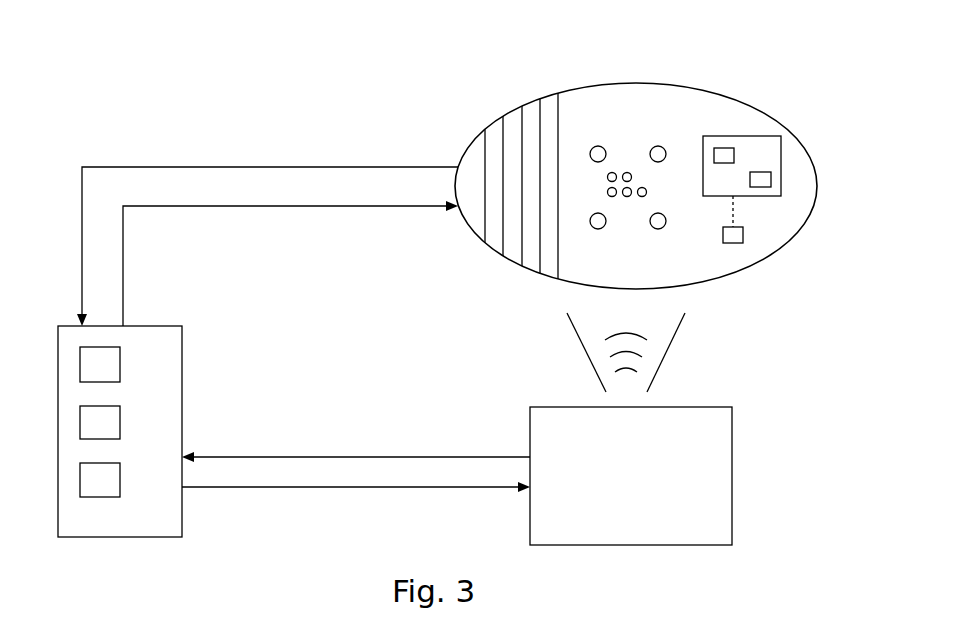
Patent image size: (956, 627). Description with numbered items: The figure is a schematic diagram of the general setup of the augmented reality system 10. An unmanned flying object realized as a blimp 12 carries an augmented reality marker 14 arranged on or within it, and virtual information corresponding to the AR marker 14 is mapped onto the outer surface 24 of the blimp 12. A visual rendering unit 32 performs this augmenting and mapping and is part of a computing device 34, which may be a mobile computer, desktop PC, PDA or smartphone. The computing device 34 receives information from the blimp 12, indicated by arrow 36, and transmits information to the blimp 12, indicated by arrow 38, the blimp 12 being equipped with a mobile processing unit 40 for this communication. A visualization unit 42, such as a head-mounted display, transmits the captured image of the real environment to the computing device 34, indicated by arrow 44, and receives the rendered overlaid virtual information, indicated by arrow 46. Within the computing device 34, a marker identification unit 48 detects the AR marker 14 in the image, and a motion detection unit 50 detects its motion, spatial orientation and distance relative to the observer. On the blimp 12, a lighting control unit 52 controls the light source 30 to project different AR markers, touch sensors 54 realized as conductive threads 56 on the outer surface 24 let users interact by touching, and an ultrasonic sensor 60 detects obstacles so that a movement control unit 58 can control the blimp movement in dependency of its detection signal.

The augmented reality system 10 is at (190, 83).
The blimp 12 is at (686, 78).
The augmented reality marker 14 is at (624, 117).
The outer surface 24 is at (753, 267).
The light source 30 is at (603, 226).
The visual rendering unit 32 is at (120, 365).
The computing device 34 is at (58, 370).
The arrow 36 is at (265, 167).
The arrow 38 is at (267, 208).
The mobile processing unit 40 is at (781, 157).
The visualization unit 42 is at (732, 477).
The arrow 44 is at (366, 457).
The arrow 46 is at (362, 490).
The marker identification unit 48 is at (120, 422).
The motion detection unit 50 is at (120, 480).
The lighting control unit 52 is at (710, 152).
The touch sensor 54 is at (518, 120).
The conductive threads 56 is at (503, 238).
The movement control unit 58 is at (760, 187).
The ultrasonic sensor 60 is at (723, 240).